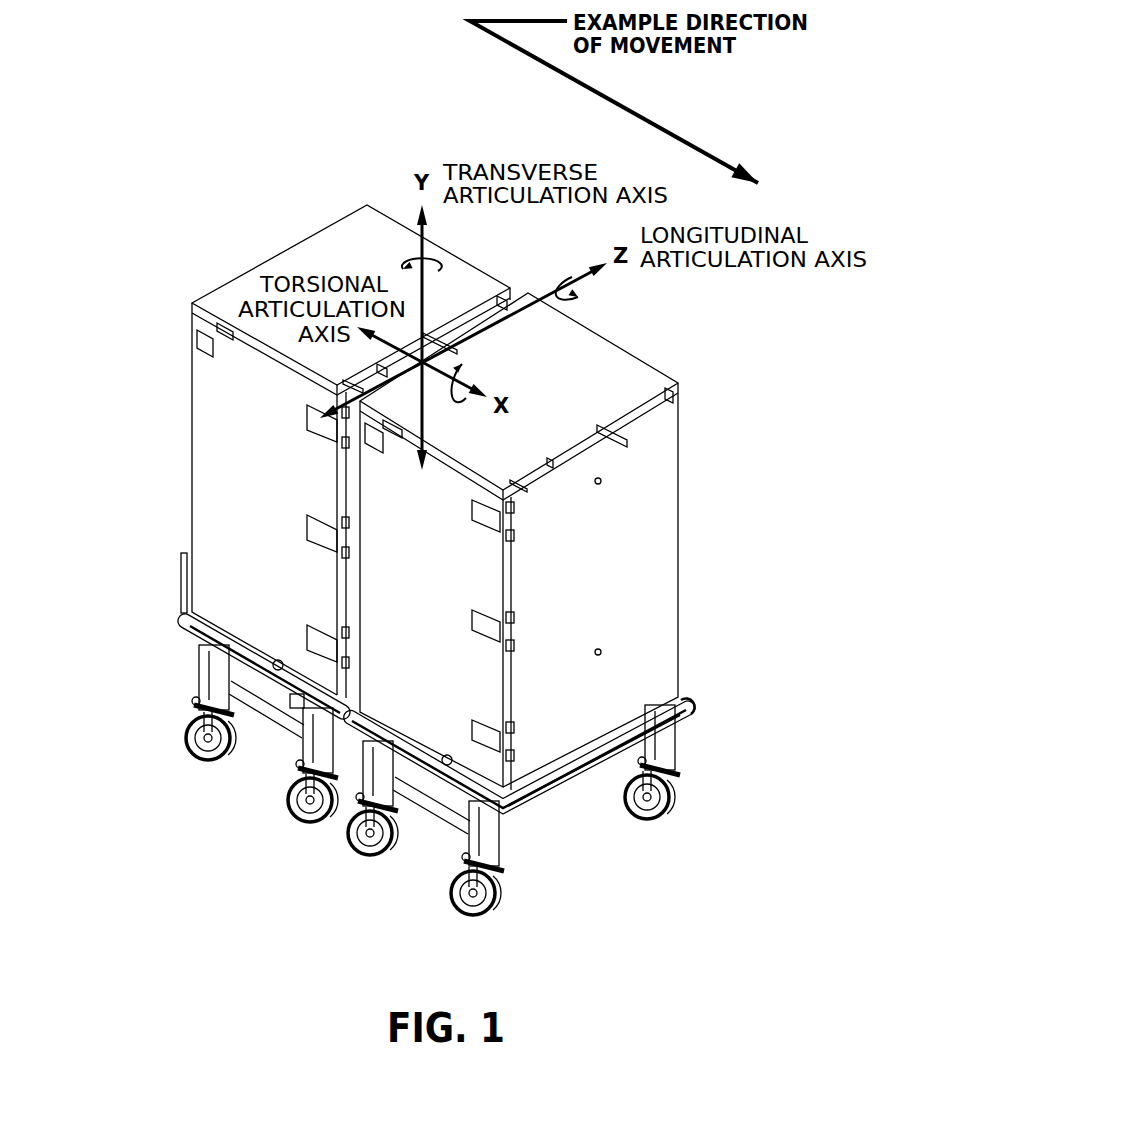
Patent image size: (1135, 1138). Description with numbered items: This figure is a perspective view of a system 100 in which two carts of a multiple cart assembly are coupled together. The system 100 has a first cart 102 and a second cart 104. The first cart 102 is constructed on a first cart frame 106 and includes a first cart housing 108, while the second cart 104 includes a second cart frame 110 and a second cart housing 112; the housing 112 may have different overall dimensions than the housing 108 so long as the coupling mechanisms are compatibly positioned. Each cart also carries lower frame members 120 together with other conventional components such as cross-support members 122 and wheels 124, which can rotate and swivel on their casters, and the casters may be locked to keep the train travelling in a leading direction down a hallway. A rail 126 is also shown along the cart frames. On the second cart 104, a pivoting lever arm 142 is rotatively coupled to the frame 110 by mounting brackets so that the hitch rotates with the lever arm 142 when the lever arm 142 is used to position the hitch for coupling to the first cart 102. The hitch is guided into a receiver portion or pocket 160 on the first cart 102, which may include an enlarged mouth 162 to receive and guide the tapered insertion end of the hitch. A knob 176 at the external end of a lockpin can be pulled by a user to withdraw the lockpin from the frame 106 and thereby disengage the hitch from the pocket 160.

The system 100 is at (444, 559).
The first cart 102 is at (268, 210).
The second cart 104 is at (570, 541).
The first cart frame 106 is at (190, 638).
The first cart housing 108 is at (195, 447).
The second cart frame 110 is at (556, 769).
The second cart housing 112 is at (642, 585).
The lower frame member 120 is at (410, 784).
The cross-support member 122 is at (305, 790).
The wheel 124 is at (483, 835).
The bumper rail 126 is at (205, 647).
The pivoting lever arm 142 is at (222, 757).
The pocket 160 is at (604, 789).
The enlarged mouth 162 is at (721, 682).
The knob 176 is at (283, 718).